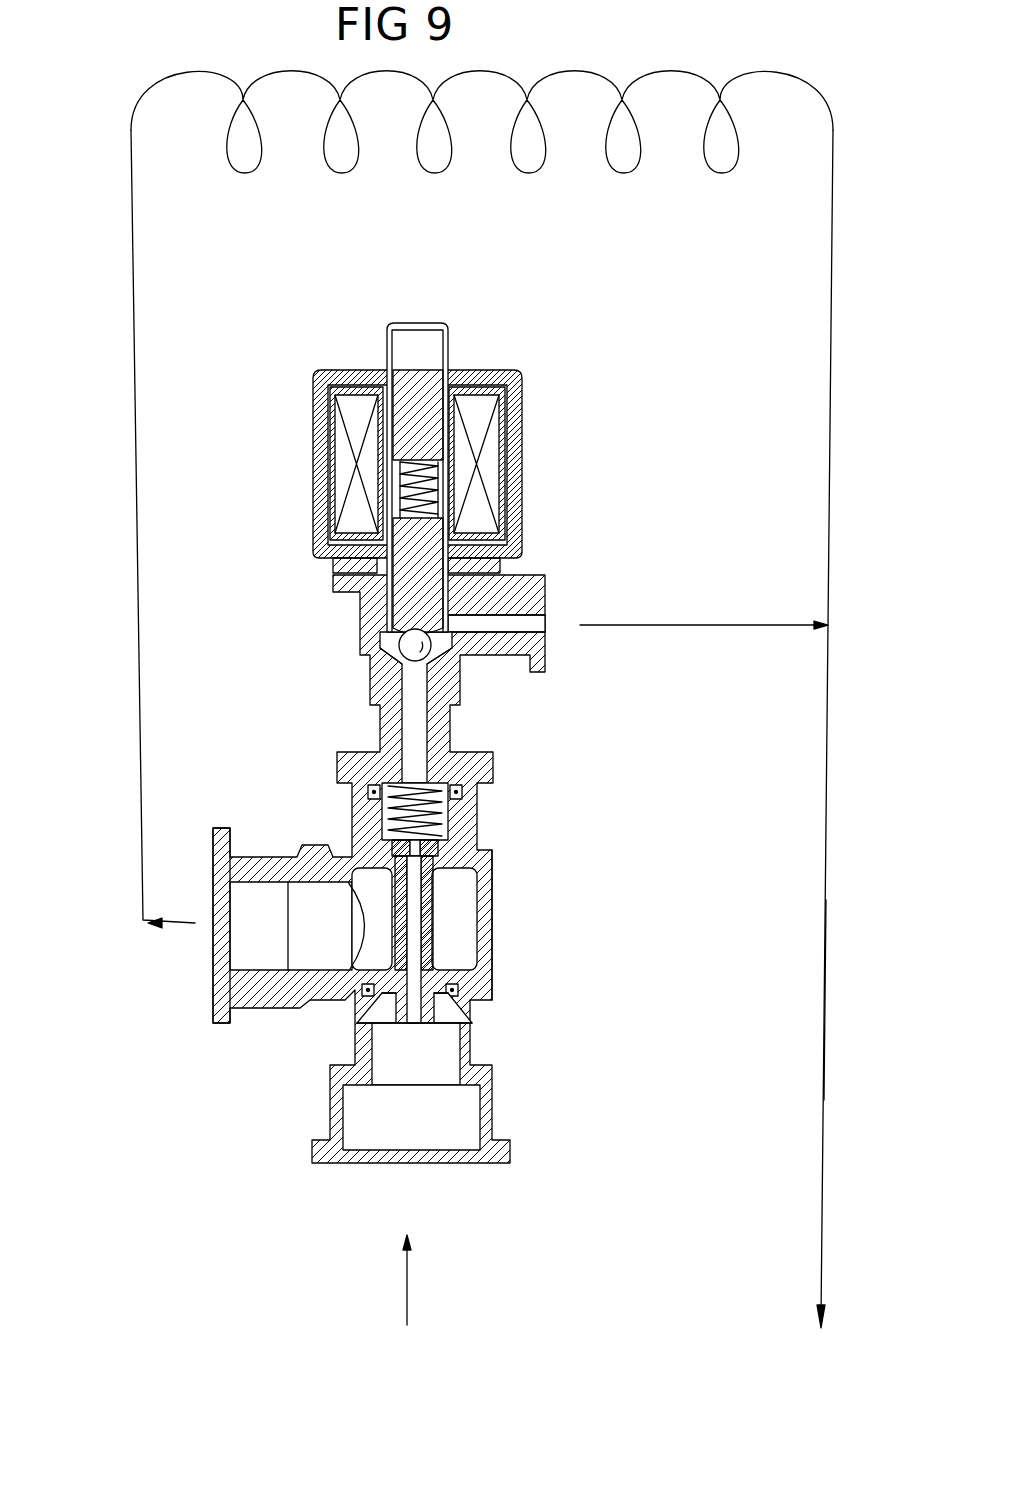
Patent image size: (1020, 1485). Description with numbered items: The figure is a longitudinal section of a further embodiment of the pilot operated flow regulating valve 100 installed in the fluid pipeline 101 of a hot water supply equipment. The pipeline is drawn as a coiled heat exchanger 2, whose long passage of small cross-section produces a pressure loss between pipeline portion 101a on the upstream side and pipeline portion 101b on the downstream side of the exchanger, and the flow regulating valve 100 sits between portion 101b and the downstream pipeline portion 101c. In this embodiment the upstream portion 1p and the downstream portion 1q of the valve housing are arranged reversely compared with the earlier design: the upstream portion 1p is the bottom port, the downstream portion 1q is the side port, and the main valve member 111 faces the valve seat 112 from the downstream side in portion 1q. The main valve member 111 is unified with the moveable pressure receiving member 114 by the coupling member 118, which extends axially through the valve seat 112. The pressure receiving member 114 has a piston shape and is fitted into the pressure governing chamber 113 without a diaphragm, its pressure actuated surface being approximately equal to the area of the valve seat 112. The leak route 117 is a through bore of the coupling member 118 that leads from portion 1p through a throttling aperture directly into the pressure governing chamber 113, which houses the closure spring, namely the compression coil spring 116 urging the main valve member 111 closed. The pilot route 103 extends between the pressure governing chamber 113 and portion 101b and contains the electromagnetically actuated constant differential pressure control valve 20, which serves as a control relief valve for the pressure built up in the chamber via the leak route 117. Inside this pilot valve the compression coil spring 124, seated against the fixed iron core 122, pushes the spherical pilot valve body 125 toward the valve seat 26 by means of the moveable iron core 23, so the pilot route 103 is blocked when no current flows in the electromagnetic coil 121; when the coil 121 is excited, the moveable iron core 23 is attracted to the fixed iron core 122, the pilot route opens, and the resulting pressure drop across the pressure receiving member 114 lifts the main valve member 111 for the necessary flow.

The heat exchanger 2 is at (496, 142).
The constant differential pressure control valve 20 is at (556, 355).
The moveable iron core 23 is at (408, 603).
The valve seat 26 is at (428, 657).
The pilot operated flow regulating valve 100 is at (545, 995).
The fluid pipeline 101 is at (418, 1262).
The pipeline portion 101a is at (137, 320).
The pipeline portion 101b is at (828, 405).
The downstream pipeline portion 101c is at (822, 1038).
The pilot route 103 is at (433, 743).
The main valve member 111 is at (445, 978).
The valve seat 112 is at (473, 1005).
The pressure governing chamber 113 is at (453, 820).
The moveable pressure receiving member 114 is at (365, 848).
The compression coil spring 116 is at (375, 830).
The leak route 117 is at (460, 850).
The coupling member 118 is at (437, 928).
The electromagnetic coil 121 is at (478, 497).
The fixed iron core 122 is at (450, 362).
The compression coil spring 124 is at (452, 463).
The spherical pilot valve body 125 is at (410, 650).
The upstream portion 1p is at (463, 1120).
The downstream portion 1q is at (257, 980).